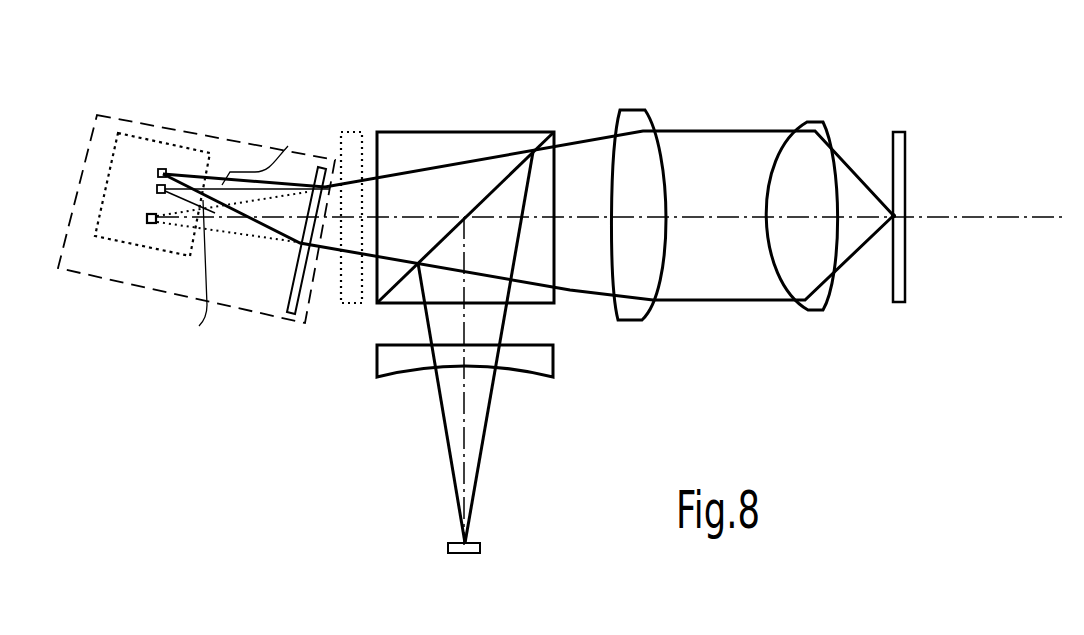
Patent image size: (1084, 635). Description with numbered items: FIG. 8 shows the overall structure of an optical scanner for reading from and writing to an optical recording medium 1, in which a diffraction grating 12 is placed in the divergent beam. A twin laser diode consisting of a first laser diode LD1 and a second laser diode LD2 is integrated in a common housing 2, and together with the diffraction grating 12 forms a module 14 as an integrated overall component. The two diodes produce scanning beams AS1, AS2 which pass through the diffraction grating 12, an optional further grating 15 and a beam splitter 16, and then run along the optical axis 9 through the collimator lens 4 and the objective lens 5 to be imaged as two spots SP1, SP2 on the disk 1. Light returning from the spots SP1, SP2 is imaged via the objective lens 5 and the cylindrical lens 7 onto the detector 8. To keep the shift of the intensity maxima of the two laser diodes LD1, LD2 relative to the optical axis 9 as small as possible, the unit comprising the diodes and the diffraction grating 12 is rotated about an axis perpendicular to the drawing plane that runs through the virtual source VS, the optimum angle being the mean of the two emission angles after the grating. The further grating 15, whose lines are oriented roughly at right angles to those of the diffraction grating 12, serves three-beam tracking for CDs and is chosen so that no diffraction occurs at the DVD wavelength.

The optical recording medium 1 is at (903, 145).
The common housing 2 is at (207, 152).
The collimator lens 4 is at (633, 120).
The objective lens 5 is at (813, 128).
The cylindrical lens 7 is at (553, 368).
The detector 8 is at (481, 548).
The optical axis 9 is at (714, 219).
The diffraction grating 12 is at (289, 318).
The module 14 is at (249, 145).
The further grating 15 is at (353, 130).
The beam splitter 16 is at (427, 147).
The first laser diode LD1 is at (160, 186).
The second laser diode LD2 is at (165, 172).
The first scanning beam AS1 is at (194, 355).
The second scanning beam AS2 is at (328, 152).
The virtual source VS is at (152, 224).
The first spot SP1 is at (893, 214).
The second spot SP2 is at (888, 322).